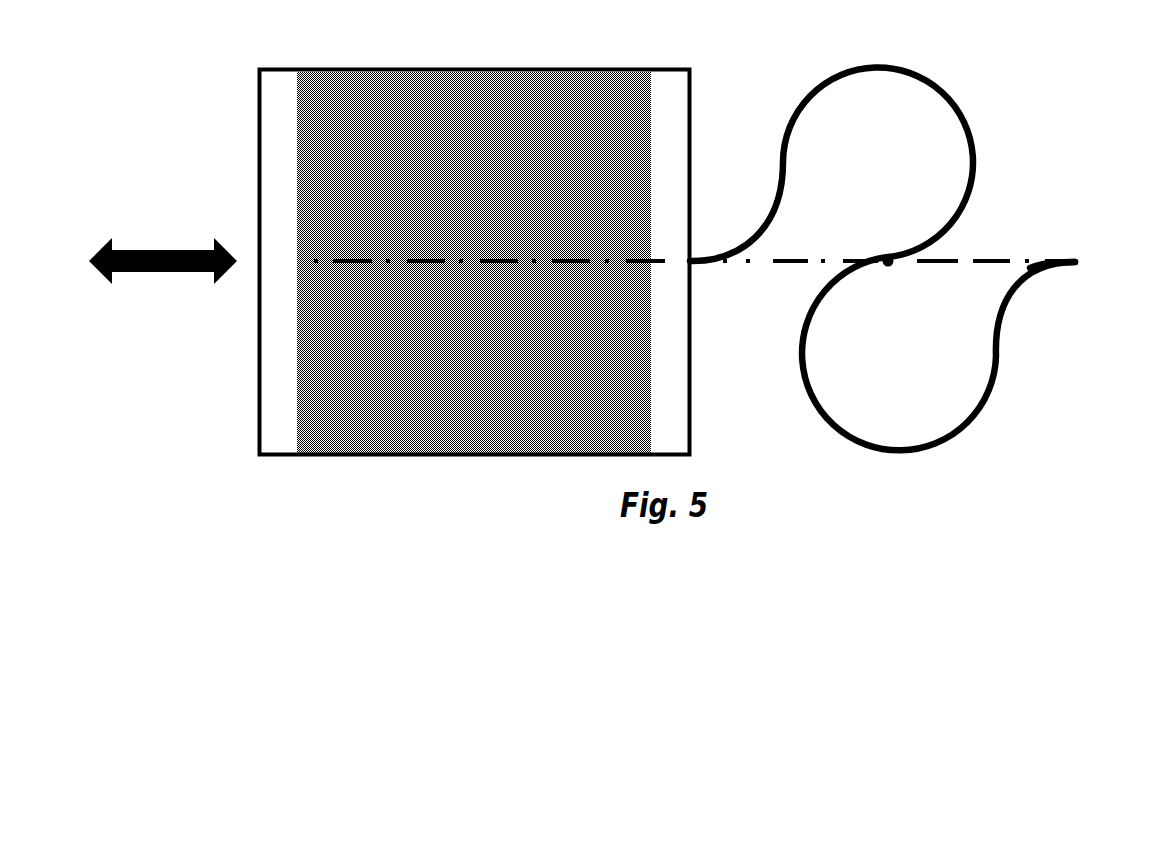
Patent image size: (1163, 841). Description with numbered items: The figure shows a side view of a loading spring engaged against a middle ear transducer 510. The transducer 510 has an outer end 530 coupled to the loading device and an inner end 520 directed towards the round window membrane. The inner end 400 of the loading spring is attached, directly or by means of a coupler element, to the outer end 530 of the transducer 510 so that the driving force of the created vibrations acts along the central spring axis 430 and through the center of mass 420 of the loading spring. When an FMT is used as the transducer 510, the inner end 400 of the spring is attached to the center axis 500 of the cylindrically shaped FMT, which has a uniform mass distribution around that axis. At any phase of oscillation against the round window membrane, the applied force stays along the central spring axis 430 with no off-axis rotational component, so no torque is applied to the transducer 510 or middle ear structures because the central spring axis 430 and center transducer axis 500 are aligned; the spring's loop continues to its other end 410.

The inner end of the loading spring 400 is at (697, 263).
The fiber distal end 410 is at (1062, 266).
The center of mass of the loading spring 420 is at (893, 266).
The central spring axis 430 is at (1010, 260).
The center axis of the FMT 500 is at (362, 267).
The middle ear transducer 510 is at (456, 68).
The inner end of the transducer 520 is at (289, 68).
The outer end of the transducer 530 is at (665, 70).